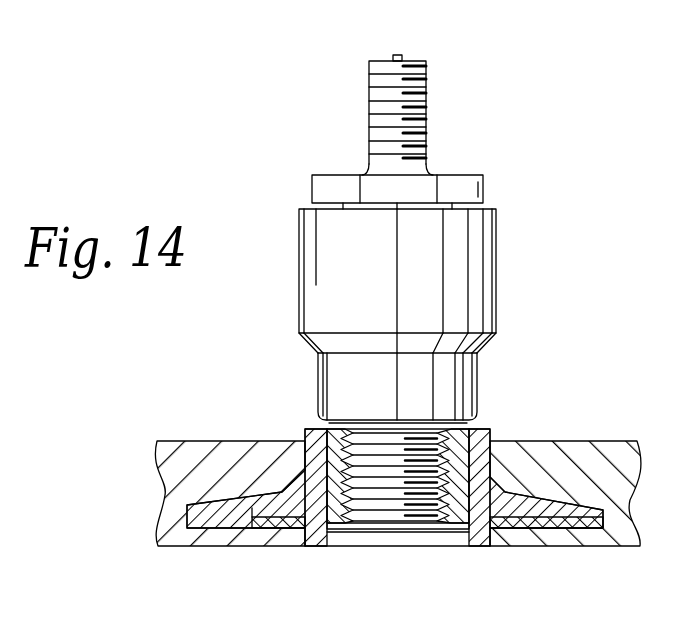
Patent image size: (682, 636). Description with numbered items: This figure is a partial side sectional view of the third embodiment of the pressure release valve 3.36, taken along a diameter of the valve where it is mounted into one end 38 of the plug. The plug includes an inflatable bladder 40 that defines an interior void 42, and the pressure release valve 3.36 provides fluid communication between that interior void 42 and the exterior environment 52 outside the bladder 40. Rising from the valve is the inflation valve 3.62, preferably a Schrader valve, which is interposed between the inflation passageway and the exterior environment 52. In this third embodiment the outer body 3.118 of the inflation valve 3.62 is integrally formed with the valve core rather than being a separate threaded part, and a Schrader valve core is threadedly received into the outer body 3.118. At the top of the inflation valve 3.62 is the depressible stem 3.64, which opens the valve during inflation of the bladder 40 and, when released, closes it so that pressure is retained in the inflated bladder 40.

The pressure release valve 3.36 is at (505, 347).
The inflation valve 3.62 is at (428, 113).
The depressible stem 3.64 is at (397, 55).
The outer body 3.118 is at (377, 120).
The exterior environment 52 is at (539, 168).
The end 38 is at (567, 455).
The inflatable bladder 40 is at (551, 538).
The interior void 42 is at (268, 605).